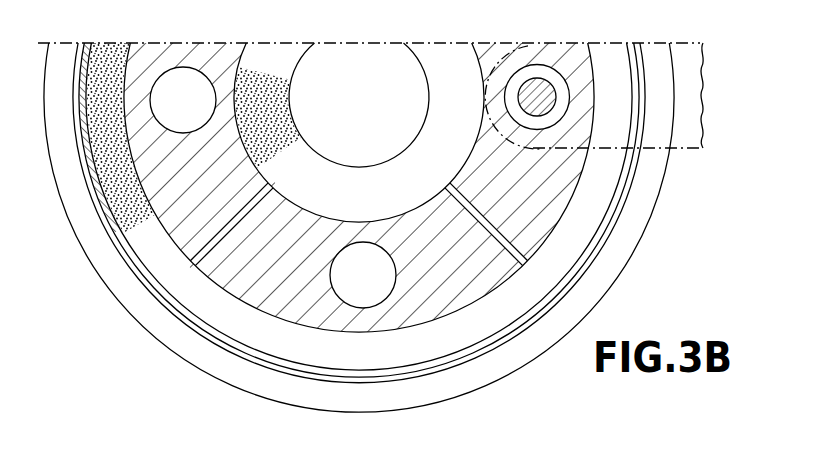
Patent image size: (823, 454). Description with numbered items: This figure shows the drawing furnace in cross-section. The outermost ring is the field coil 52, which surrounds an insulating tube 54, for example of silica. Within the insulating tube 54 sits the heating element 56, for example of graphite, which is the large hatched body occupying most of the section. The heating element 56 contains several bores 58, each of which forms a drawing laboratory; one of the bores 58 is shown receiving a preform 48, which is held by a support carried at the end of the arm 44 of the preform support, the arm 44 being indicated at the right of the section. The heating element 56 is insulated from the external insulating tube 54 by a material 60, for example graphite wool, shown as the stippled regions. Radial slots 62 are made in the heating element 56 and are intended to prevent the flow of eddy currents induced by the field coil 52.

The arm 44 is at (702, 148).
The preform 48 is at (549, 96).
The field coil 52 is at (131, 296).
The insulating tube 54 is at (88, 50).
The heating element 56 is at (181, 53).
The bores 58 is at (182, 123).
The material 60 is at (110, 48).
The slots 62 is at (453, 186).